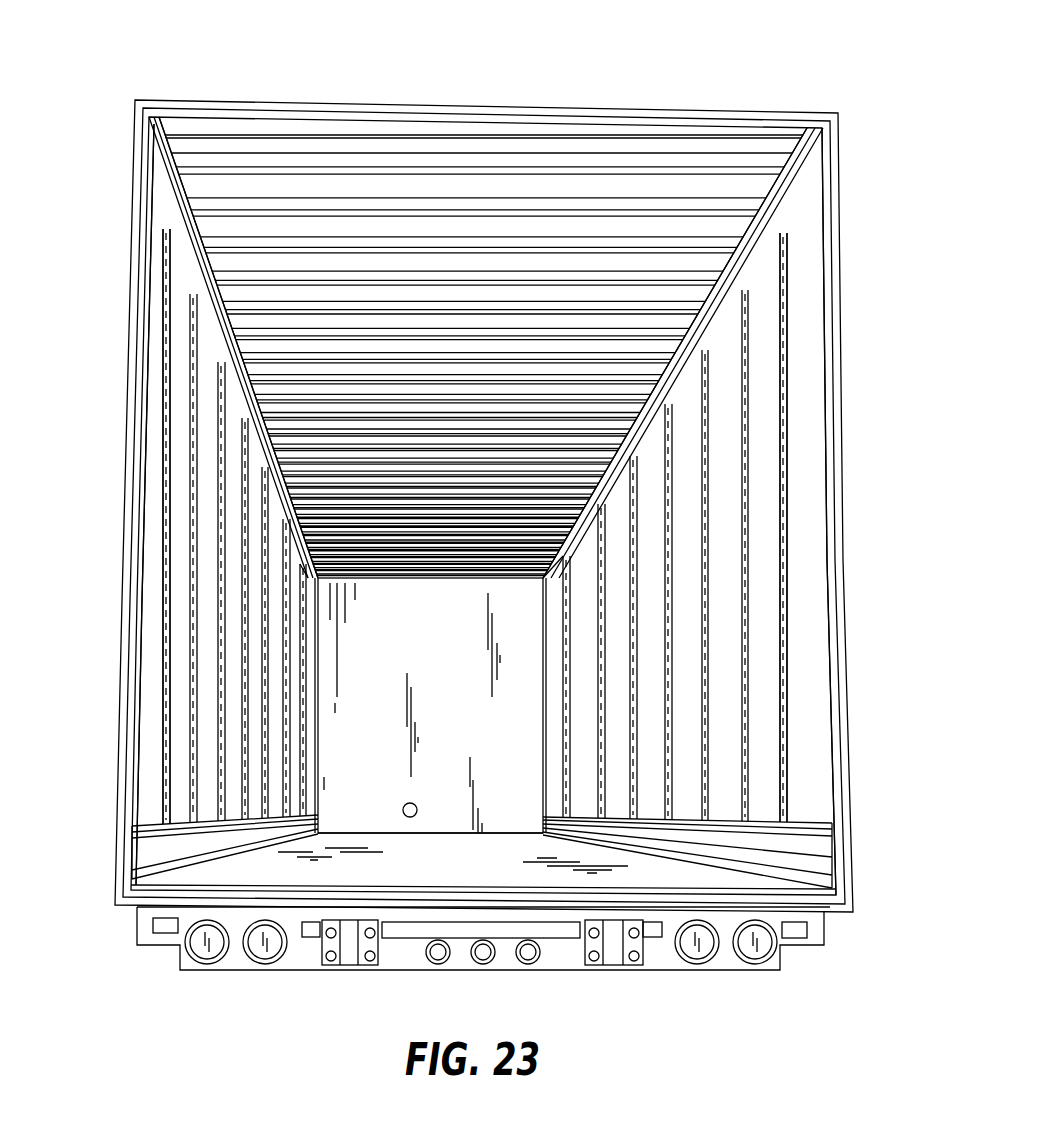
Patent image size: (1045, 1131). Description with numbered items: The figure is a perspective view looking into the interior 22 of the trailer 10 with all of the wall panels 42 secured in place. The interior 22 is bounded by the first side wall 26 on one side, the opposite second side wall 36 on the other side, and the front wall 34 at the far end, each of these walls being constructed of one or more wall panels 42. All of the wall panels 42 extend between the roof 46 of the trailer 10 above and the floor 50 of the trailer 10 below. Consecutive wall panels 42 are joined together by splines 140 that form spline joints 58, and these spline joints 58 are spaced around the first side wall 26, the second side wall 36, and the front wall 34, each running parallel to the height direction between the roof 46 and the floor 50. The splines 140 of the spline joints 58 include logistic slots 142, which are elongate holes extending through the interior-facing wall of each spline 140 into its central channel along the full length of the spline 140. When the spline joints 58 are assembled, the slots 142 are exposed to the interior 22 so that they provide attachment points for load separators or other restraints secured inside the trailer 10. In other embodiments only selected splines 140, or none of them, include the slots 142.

The trailer 10 is at (240, 76).
The interior 22 is at (265, 858).
The first side wall 26 is at (100, 655).
The front wall 34 is at (456, 682).
The second side wall 36 is at (874, 740).
The wall panels 42 is at (221, 540).
The roof 46 is at (620, 107).
The floor 50 is at (465, 874).
The spline joint 58 is at (268, 648).
The spline 140 is at (167, 455).
The slots 142 is at (297, 773).